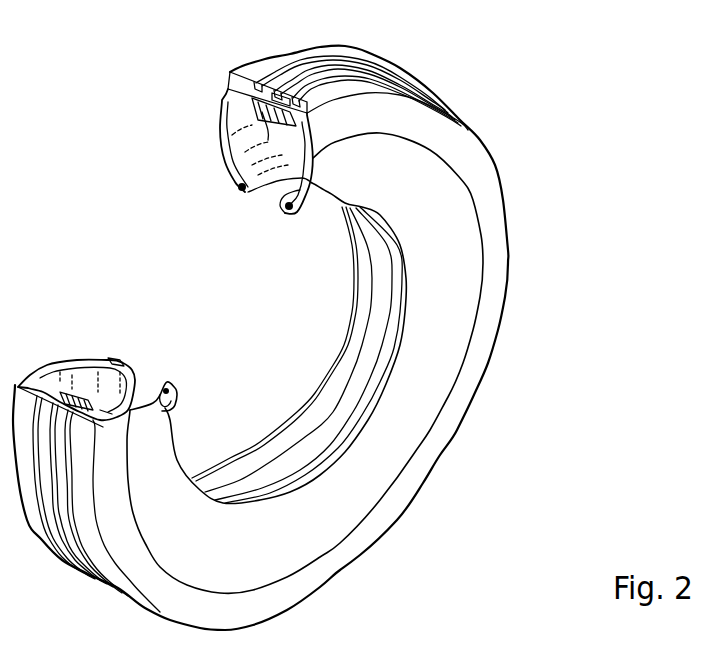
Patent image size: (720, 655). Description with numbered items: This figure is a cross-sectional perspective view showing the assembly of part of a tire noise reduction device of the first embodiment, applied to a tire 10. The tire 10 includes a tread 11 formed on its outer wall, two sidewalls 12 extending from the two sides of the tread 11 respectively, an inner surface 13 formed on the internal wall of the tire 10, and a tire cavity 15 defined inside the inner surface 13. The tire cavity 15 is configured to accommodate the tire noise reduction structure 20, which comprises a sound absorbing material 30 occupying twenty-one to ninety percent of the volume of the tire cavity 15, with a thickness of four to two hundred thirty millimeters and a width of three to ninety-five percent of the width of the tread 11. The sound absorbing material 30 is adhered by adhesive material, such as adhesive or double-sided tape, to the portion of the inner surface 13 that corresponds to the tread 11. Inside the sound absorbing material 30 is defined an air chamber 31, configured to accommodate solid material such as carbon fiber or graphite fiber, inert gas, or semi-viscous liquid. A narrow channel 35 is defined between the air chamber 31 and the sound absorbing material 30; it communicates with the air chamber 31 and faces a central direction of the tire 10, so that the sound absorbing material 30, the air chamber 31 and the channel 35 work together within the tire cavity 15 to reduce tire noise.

The tire 10 is at (436, 491).
The tread 11 is at (351, 72).
The sidewall 12 is at (437, 177).
The inner surface 13 is at (143, 407).
The tire cavity 15 is at (60, 373).
The tire noise reduction structure 20 is at (252, 106).
The sound absorbing material 30 is at (283, 127).
The air chamber 31 is at (277, 100).
The channel 35 is at (243, 152).